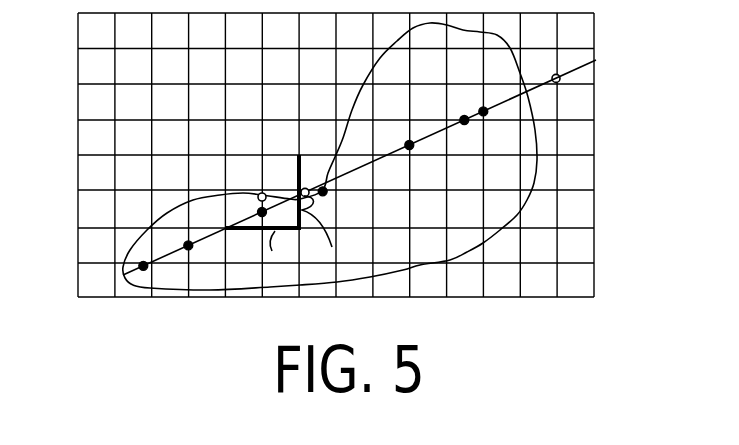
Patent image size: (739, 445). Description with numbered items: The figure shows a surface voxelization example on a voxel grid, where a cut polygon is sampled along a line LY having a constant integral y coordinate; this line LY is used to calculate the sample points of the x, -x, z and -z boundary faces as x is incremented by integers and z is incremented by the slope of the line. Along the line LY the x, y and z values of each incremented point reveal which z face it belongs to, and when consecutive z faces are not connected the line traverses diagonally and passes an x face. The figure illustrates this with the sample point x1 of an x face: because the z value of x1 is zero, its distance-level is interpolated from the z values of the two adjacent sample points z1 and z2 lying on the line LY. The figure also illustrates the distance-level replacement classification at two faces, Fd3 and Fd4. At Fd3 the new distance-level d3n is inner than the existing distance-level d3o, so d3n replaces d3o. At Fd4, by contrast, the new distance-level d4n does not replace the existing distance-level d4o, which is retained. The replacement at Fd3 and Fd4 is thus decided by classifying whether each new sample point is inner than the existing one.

The line with constant integral y coordinate LY is at (579, 68).
The existing distance-level d3o is at (259, 179).
The new distance-level d3n is at (234, 207).
The new distance-level d4n is at (321, 158).
The existing distance-level d4o is at (345, 202).
The replacement at Fd3 is at (270, 260).
The replacement at Fd4 is at (342, 230).
The adjacent sample point z1 is at (400, 127).
The sample point of the x face x1 is at (450, 103).
The adjacent sample point z2 is at (497, 123).